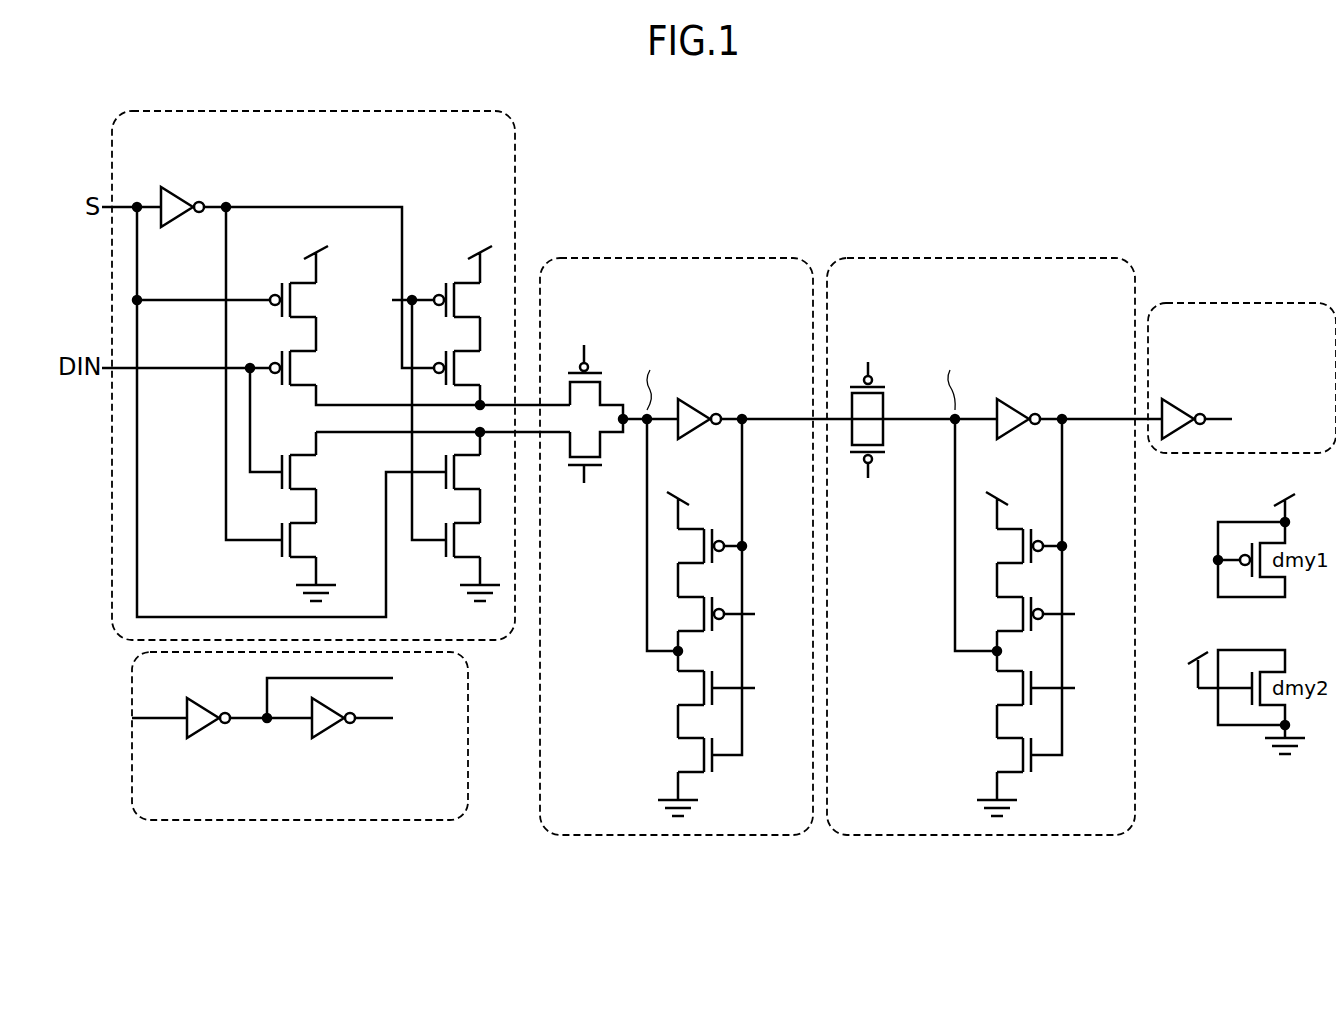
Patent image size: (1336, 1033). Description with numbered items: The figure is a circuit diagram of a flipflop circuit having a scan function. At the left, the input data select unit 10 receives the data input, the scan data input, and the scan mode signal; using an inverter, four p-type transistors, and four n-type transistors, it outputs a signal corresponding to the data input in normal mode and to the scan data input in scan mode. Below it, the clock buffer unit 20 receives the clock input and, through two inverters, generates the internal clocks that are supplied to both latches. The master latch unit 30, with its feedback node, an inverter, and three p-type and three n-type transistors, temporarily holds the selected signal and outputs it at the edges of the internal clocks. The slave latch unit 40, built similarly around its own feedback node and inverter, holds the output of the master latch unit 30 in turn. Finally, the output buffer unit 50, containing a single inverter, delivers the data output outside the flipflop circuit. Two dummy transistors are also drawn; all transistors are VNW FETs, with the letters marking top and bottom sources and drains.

The input data select unit 10 is at (304, 110).
The clock buffer unit 20 is at (298, 821).
The master latch unit 30 is at (675, 256).
The slave latch unit 40 is at (980, 256).
The output buffer unit 50 is at (1244, 301).